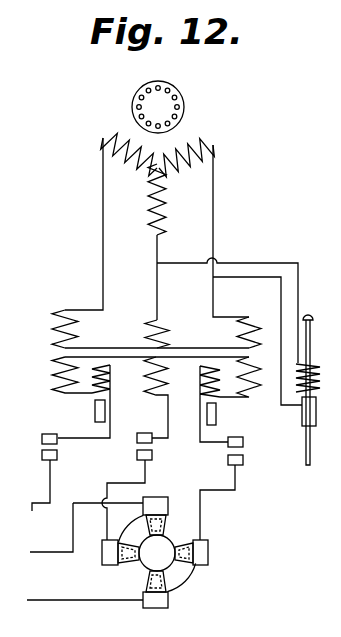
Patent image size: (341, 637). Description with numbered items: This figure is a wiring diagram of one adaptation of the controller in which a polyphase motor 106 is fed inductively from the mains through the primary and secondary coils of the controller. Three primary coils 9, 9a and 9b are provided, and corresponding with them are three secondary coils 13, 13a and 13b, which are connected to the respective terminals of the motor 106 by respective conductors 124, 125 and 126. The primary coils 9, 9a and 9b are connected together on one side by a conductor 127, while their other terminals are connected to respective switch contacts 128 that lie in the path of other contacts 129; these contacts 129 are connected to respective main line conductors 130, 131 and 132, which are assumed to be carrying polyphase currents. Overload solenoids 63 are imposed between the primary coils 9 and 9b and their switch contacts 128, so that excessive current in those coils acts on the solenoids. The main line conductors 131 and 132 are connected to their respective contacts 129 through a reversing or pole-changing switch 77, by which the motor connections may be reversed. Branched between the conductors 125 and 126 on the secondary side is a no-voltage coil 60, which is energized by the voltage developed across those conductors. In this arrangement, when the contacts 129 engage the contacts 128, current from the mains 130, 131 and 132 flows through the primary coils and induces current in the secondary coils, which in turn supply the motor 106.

The motor 106 is at (177, 107).
The conductor 124 is at (103, 237).
The conductor 125 is at (157, 248).
The conductor 126 is at (213, 202).
The conductor 127 is at (180, 357).
The secondary coil 13 is at (60, 322).
The secondary coil 13a is at (150, 328).
The secondary coil 13b is at (252, 321).
The primary coil 9 is at (52, 372).
The primary coil 9a is at (148, 385).
The primary coil 9b is at (252, 374).
The overload solenoid 63 is at (110, 365).
The switch contact 128 is at (236, 437).
The contact 129 is at (252, 468).
The main line conductor 130 is at (34, 506).
The main line conductor 131 is at (48, 552).
The main line conductor 132 is at (58, 600).
The reversing or pole-changing switch 77 is at (155, 552).
The no-voltage coil 60 is at (312, 370).